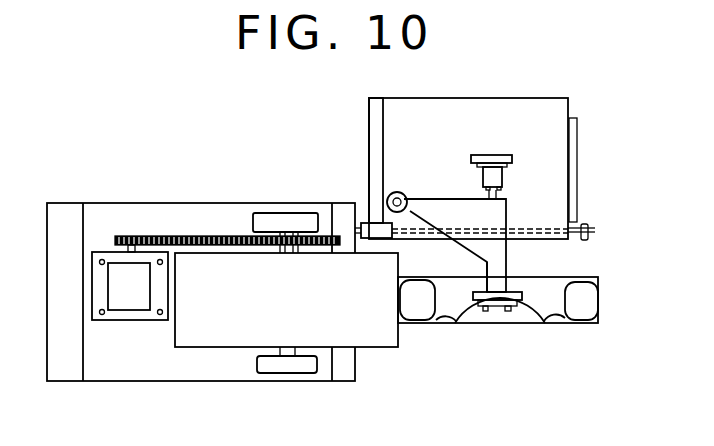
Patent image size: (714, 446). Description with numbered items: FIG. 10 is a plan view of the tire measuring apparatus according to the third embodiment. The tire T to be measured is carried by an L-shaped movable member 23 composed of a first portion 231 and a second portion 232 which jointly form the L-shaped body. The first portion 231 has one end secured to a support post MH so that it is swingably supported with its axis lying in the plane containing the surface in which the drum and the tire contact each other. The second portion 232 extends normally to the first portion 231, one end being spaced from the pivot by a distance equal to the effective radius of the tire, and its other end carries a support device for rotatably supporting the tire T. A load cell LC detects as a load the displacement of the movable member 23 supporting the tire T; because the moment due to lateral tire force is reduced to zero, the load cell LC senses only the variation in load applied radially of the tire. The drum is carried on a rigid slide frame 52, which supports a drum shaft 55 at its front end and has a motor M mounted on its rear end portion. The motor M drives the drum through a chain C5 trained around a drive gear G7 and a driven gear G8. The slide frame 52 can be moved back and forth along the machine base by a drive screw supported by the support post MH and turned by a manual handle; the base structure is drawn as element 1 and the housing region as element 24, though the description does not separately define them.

The machine base block 1 is at (193, 318).
The movable member 23 is at (482, 218).
The housing 24 is at (476, 115).
The slide frame 52 is at (323, 214).
The drum shaft 55 is at (287, 366).
The first portion 231 is at (431, 199).
The second portion 232 is at (497, 259).
The chain C5 is at (205, 236).
The drive gear G7 is at (134, 236).
The driven gear G8 is at (247, 236).
The load cell LC is at (504, 182).
The motor M is at (132, 290).
The support post MH is at (377, 99).
The tire T is at (599, 296).